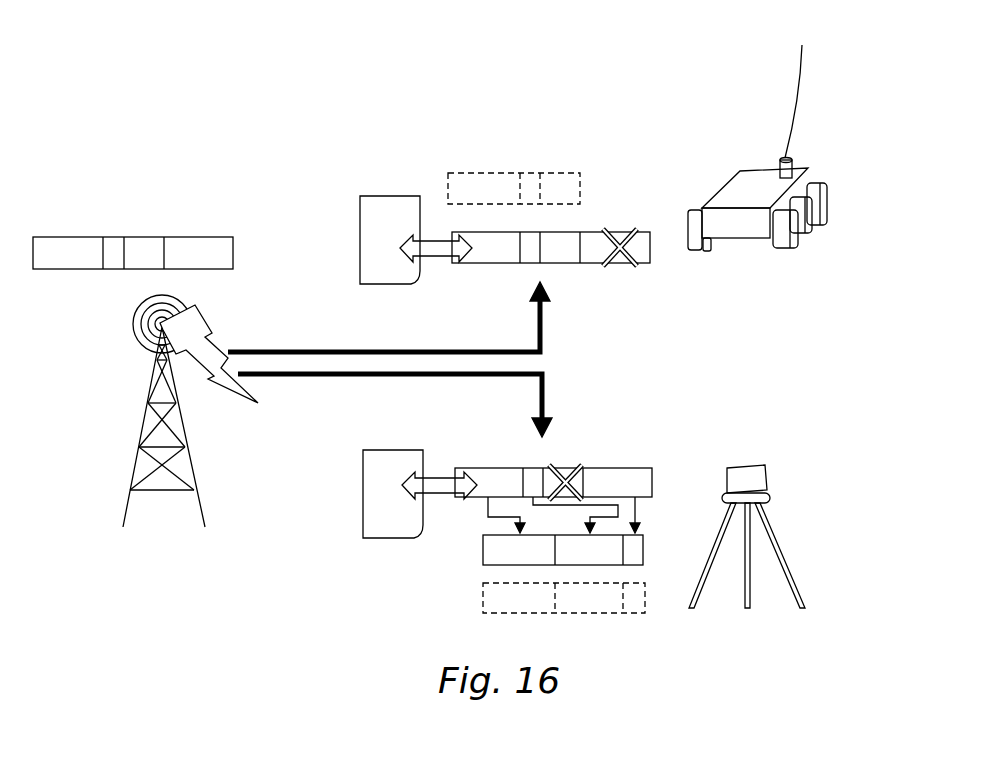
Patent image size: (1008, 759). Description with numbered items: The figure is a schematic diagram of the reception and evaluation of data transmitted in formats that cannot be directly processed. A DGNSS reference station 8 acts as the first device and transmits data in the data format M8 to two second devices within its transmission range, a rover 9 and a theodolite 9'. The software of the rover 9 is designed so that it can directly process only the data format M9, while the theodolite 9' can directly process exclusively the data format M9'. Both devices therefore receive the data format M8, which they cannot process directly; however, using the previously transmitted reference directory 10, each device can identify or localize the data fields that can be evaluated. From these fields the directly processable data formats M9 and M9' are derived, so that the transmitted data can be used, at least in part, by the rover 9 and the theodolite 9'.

The DGNSS reference station 8 is at (130, 411).
The rover 9 is at (728, 148).
The theodolite 9' is at (768, 485).
The reference directory 10 is at (319, 349).
The data format M8 is at (369, 334).
The data format M9 is at (490, 168).
The data format M9' is at (620, 631).